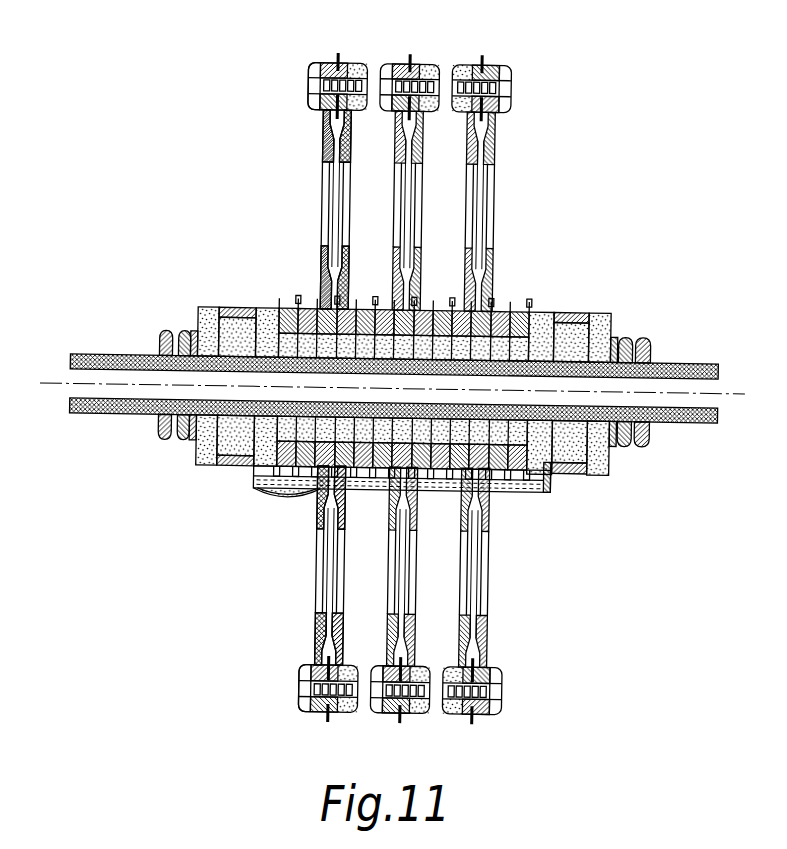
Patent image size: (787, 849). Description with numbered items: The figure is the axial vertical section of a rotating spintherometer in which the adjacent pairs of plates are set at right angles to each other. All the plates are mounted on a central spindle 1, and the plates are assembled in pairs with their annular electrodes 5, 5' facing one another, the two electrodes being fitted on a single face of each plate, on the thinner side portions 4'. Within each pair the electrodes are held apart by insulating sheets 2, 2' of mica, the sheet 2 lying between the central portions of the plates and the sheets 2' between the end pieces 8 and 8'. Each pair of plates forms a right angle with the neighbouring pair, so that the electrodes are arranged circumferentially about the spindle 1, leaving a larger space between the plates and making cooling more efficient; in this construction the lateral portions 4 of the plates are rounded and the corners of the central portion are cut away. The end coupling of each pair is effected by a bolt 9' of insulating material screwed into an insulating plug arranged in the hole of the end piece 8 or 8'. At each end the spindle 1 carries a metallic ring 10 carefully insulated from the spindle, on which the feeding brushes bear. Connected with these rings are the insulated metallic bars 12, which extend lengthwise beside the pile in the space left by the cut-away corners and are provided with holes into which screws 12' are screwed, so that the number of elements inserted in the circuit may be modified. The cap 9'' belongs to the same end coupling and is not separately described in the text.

The spindle 1 is at (117, 372).
The insulating sheet 2 is at (390, 367).
The insulating sheet 2' is at (307, 387).
The lateral portion 4 is at (406, 387).
The side portion 4' is at (406, 388).
The annular electrode 5 is at (312, 552).
The annular electrode 5' is at (341, 263).
The end piece 8 is at (302, 727).
The end piece 8' is at (329, 42).
The bolt of insulating material 9' is at (284, 387).
The cap nut body 9'' is at (405, 388).
The metallic ring 10 is at (231, 310).
The conducting bar 12 is at (419, 498).
The screw 12' is at (274, 512).